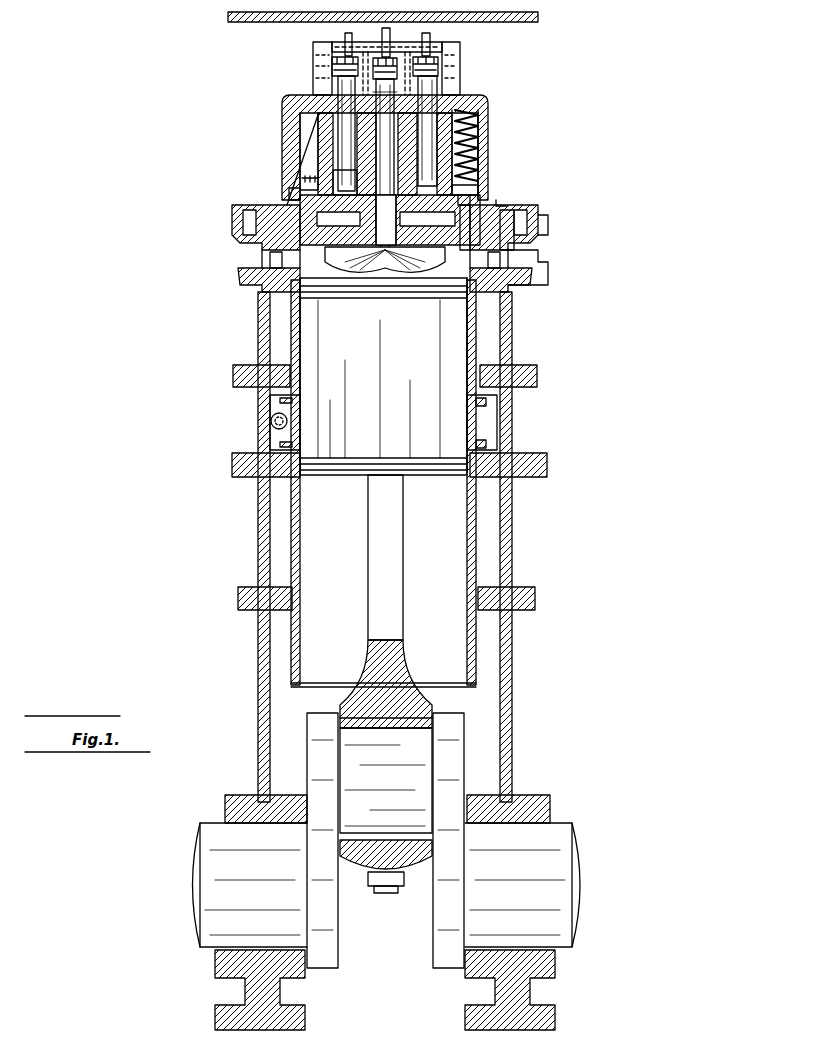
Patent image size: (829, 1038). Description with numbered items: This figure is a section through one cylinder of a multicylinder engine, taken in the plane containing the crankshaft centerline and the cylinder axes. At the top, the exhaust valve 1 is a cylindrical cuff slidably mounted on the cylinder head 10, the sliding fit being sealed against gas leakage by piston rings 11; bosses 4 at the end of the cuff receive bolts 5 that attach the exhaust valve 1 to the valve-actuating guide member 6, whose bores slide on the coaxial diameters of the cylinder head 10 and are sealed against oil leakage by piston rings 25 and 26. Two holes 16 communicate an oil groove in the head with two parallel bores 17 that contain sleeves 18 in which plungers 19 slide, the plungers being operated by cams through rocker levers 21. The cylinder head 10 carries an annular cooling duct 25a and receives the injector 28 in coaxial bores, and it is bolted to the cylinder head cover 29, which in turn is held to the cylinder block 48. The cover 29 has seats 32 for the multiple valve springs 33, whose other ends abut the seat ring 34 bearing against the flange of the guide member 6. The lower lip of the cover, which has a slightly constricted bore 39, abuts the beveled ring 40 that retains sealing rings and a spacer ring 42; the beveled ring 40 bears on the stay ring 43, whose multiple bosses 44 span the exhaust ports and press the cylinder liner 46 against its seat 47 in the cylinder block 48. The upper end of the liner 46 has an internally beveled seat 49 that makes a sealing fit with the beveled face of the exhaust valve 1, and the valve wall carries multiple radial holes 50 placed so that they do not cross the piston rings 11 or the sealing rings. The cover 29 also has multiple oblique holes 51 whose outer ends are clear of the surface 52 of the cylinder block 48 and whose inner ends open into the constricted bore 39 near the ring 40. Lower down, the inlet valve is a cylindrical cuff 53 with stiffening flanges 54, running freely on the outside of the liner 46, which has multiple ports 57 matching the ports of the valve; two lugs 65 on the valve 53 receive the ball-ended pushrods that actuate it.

The exhaust valve 1 is at (268, 250).
The bosses 4 is at (290, 196).
The bolts 5 is at (300, 182).
The valve-actuating guide member 6 is at (318, 156).
The cylinder head 10 is at (287, 107).
The piston rings 11 is at (312, 262).
The holes 16 is at (318, 172).
The parallel bores 17 is at (320, 162).
The sleeves 18 is at (298, 96).
The plungers 19 is at (386, 132).
The rocker levers 21 is at (345, 42).
The piston rings 25 is at (318, 140).
The annular cooling duct 25a is at (338, 219).
The piston rings 26 is at (345, 180).
The injector 28 is at (398, 86).
The cylinder head cover 29 is at (489, 99).
The seats 32 is at (489, 127).
The valve springs 33 is at (489, 146).
The seat ring 34 is at (480, 172).
The constricted bore 39 is at (476, 188).
The beveled ring 40 is at (233, 212).
The spacer ring 42 is at (244, 230).
The stay ring 43 is at (514, 228).
The bosses 44 is at (505, 252).
The cylinder liner 46 is at (477, 342).
The seat 47 is at (262, 272).
The cylinder block 48 is at (533, 276).
The internally beveled seat 49 is at (530, 262).
The holes 50 is at (508, 206).
The oblique holes 51 is at (472, 210).
The surface 52 is at (510, 216).
The inlet valve 53 is at (497, 421).
The stiffening flanges 54 is at (487, 408).
The ports 57 is at (298, 420).
The lugs 65 is at (271, 421).